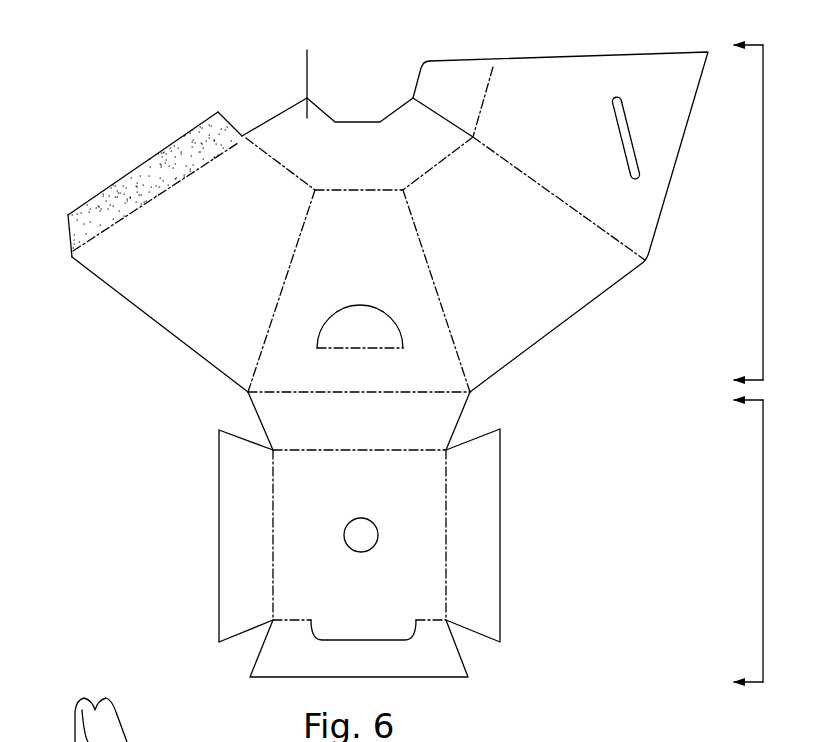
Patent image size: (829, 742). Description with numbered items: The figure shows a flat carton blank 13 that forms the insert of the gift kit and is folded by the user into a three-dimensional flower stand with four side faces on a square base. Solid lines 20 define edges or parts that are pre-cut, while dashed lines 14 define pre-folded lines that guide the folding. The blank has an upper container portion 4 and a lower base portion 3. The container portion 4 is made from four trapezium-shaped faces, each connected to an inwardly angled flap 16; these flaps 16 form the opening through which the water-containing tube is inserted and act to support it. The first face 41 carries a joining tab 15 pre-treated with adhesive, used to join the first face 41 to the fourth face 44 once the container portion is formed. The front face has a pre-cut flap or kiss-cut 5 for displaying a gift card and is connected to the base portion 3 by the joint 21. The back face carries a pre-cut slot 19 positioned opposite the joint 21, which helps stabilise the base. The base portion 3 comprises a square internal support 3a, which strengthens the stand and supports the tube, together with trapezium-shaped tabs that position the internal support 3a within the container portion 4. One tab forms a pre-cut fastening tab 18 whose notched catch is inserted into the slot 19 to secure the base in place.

The base portion 3 is at (764, 541).
The internal support 3a is at (404, 487).
The container portion 4 is at (764, 212).
The pre-cut flap 5 is at (363, 317).
The carton blank 13 is at (127, 523).
The dashed lines 14 is at (270, 317).
The joining tab 15 is at (153, 175).
The inwardly angled flap 16 is at (347, 158).
The fastening tab 18 is at (332, 626).
The pre-cut slot 19 is at (618, 155).
The solid lines 20 is at (188, 132).
The joint 21 is at (290, 392).
The first face 41 is at (158, 267).
The fourth face 44 is at (578, 102).